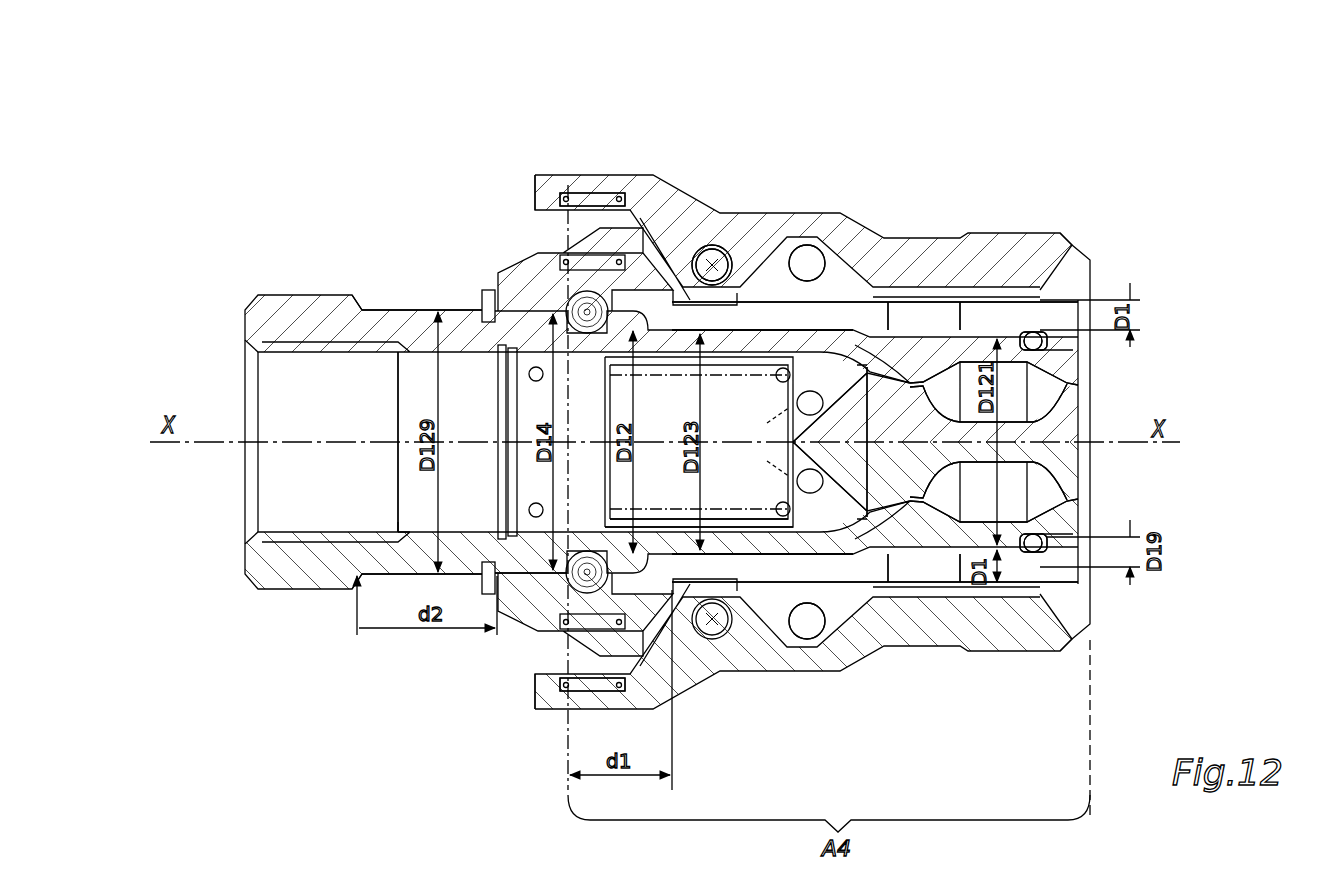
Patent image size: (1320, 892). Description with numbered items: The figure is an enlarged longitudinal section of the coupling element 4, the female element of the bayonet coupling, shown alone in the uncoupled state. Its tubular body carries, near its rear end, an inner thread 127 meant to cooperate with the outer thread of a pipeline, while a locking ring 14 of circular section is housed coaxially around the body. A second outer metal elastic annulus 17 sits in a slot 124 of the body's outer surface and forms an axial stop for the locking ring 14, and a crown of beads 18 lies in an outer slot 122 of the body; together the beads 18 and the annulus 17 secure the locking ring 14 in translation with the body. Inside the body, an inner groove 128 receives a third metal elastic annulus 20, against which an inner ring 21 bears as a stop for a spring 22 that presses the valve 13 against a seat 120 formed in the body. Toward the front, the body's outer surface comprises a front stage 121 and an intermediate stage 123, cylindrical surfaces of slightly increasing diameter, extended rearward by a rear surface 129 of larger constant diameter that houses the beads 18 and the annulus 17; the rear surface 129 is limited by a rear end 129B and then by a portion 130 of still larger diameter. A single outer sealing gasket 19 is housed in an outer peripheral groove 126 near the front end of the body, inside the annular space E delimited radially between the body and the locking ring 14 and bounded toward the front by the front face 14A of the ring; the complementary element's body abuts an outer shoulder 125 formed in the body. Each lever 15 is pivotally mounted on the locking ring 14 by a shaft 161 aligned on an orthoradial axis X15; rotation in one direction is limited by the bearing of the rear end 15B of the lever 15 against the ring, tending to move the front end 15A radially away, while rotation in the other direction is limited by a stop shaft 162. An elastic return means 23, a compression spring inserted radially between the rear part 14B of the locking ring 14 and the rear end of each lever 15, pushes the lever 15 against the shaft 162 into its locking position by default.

The coupling element 4 is at (262, 148).
The lever 15 is at (828, 226).
The rear end of the lever 15B is at (543, 195).
The front end of the lever 15A is at (1053, 250).
The front face of the locking ring 14A is at (1094, 607).
The elastic return means 23 is at (570, 186).
The shaft 161 is at (700, 246).
The axis X15 is at (713, 262).
The shaft 162 is at (808, 262).
The intermediate stage 123 is at (780, 322).
The front stage 121 is at (927, 330).
The locking ring 14 is at (833, 597).
The rear part of the locking ring 14B is at (535, 283).
The valve 13 is at (1063, 458).
The seat 120 is at (889, 390).
The outer peripheral groove 126 is at (1027, 330).
The outer sealing gasket 19 is at (1050, 337).
The annular space E is at (1020, 555).
The beads 18 is at (587, 582).
The outer slot 122 is at (562, 574).
The outer shoulder 125 is at (690, 562).
The third metal elastic annulus 20 is at (498, 353).
The inner ring 21 is at (512, 367).
The spring 22 is at (541, 380).
The second outer metal elastic annulus 17 is at (486, 290).
The portion 130 is at (277, 292).
The inner thread 127 is at (310, 345).
The rear surface 129 is at (408, 300).
The rear end of the rear surface 129B is at (366, 292).
The slot 124 is at (467, 303).
The inner groove 128 is at (487, 512).